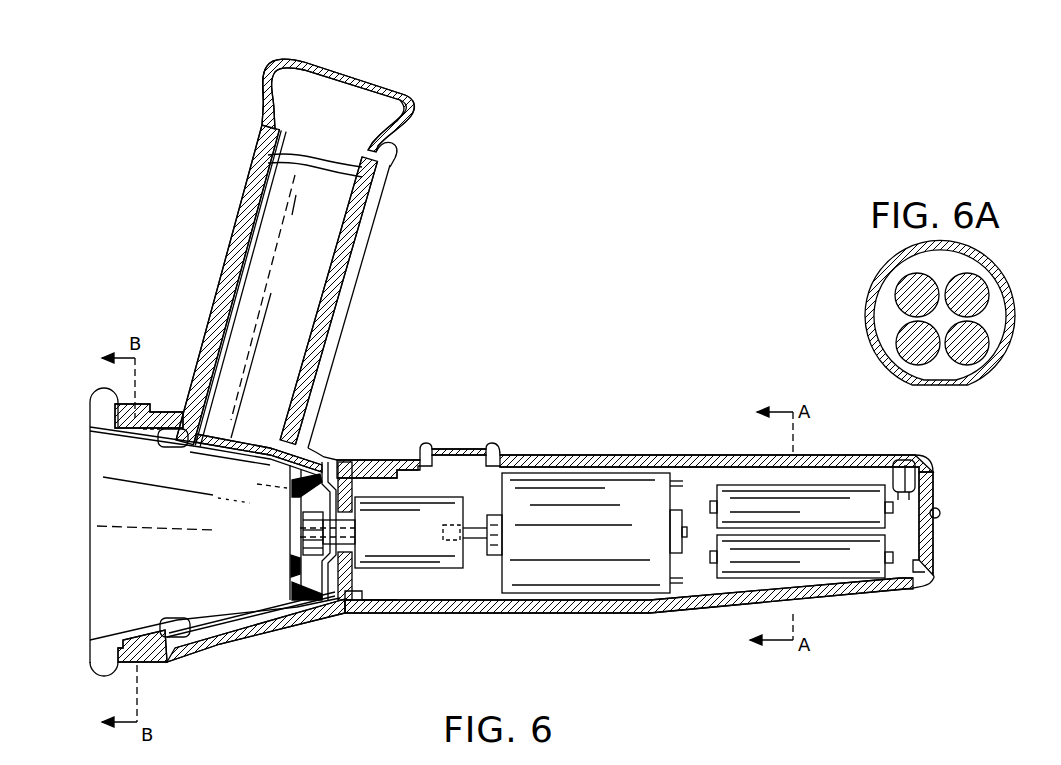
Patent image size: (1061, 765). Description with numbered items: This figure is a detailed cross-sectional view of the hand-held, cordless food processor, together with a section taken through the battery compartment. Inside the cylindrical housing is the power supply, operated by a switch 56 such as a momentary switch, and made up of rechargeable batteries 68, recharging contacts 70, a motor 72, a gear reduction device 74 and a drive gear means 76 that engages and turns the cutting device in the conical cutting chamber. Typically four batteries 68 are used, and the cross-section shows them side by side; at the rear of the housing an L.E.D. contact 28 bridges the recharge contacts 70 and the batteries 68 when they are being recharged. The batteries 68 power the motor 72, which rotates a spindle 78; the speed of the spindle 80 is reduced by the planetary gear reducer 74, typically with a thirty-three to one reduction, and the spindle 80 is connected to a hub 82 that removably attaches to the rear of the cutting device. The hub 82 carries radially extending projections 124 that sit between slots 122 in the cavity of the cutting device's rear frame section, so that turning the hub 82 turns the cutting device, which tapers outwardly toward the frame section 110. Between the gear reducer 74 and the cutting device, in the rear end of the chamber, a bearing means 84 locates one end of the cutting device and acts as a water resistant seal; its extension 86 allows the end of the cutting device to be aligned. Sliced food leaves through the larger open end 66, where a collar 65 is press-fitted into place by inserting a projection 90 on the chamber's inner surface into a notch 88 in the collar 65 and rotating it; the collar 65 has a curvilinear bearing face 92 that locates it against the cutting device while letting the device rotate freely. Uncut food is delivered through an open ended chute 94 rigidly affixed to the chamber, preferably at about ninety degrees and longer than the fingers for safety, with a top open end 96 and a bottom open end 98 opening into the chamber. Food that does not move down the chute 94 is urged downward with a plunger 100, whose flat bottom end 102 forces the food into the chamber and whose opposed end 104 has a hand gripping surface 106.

In FIG. 6, the L.E.D. contact 28 is at (893, 462).
In FIG. 6, the switch 56 is at (440, 450).
In FIG. 6, the collar 65 is at (96, 397).
In FIG. 6, the larger open end 66 is at (107, 488).
In FIG. 6, the rechargeable batteries 68 is at (874, 566).
In FIG. 6A, the rechargeable batteries 68 is at (988, 294).
In FIG. 6, the recharging contacts 70 is at (942, 514).
In FIG. 6, the motor 72 is at (587, 541).
In FIG. 6, the gear reduction device 74 is at (414, 549).
In FIG. 6, the drive gear means 76 is at (294, 515).
In FIG. 6, the spindle 78 is at (489, 530).
In FIG. 6, the spindle 80 is at (343, 529).
In FIG. 6, the hub 82 is at (331, 470).
In FIG. 6, the bearing means 84 is at (343, 490).
In FIG. 6, the extension 86 is at (328, 603).
In FIG. 6, the notch 88 is at (147, 426).
In FIG. 6, the projection 90 is at (137, 412).
In FIG. 6, the curvilinear bearing face 92 is at (175, 650).
In FIG. 6, the chute 94 is at (372, 242).
In FIG. 6, the top open end 96 is at (397, 149).
In FIG. 6, the bottom open end 98 is at (207, 427).
In FIG. 6, the plunger 100 is at (310, 265).
In FIG. 6, the flat bottom end 102 is at (248, 446).
In FIG. 6, the opposed end 104 is at (263, 58).
In FIG. 6, the hand gripping surface 106 is at (330, 62).
In FIG. 6, the frame section 110 is at (277, 618).
In FIG. 6, the slots 122 is at (292, 560).
In FIG. 6, the radially extending projections 124 is at (302, 541).